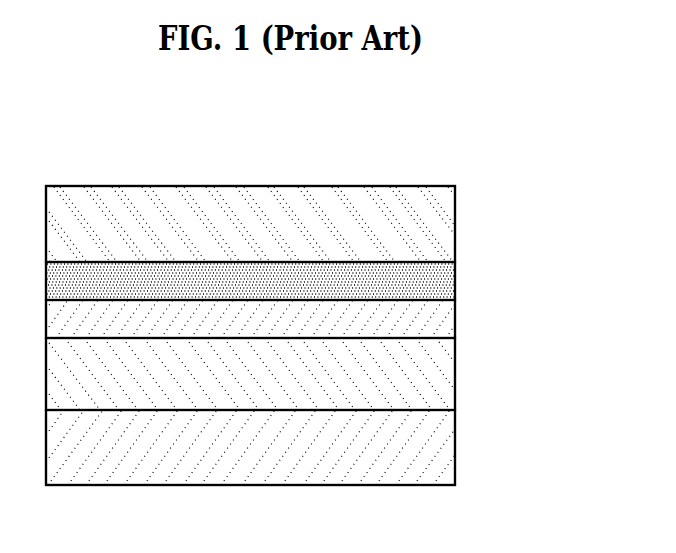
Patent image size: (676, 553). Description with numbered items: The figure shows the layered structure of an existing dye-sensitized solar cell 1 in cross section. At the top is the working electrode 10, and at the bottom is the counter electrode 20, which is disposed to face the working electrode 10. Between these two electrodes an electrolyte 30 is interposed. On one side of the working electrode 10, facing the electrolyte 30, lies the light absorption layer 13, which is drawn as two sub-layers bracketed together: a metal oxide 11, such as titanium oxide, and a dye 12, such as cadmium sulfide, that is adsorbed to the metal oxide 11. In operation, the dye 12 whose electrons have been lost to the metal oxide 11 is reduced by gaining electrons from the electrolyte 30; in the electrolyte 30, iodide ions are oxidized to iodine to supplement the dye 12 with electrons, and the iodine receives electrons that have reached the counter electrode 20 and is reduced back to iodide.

The dye-sensitized solar cell 1 is at (448, 159).
The working electrode 10 is at (455, 220).
The metal oxide 11 is at (455, 276).
The dye 12 is at (281, 319).
The light absorption layer 13 is at (297, 300).
The electrolyte 30 is at (455, 370).
The counter electrode 20 is at (455, 446).